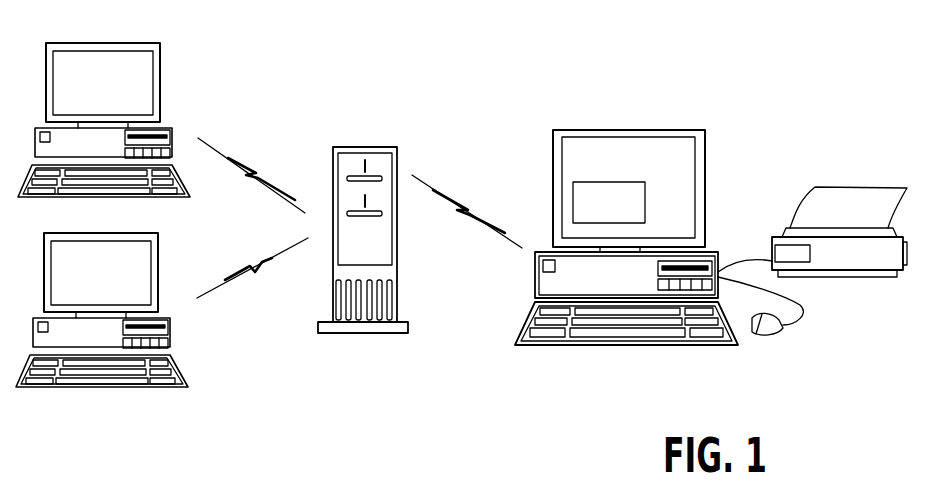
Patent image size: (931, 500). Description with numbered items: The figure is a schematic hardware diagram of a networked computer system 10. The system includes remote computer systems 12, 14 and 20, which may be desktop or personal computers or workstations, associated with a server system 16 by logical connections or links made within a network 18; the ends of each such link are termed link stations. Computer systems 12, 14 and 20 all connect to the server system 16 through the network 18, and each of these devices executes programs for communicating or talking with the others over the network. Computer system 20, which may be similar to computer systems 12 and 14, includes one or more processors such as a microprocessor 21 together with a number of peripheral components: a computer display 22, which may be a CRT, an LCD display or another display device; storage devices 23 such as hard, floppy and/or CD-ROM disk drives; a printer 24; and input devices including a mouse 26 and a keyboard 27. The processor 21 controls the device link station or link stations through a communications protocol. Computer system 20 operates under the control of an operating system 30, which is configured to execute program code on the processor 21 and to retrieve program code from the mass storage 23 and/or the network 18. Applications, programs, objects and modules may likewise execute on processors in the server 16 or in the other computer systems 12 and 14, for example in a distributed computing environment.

The networked computer system 10 is at (498, 65).
The remote computer system 12 is at (143, 43).
The remote computer system 14 is at (102, 296).
The server system 16 is at (357, 146).
The network 18 is at (230, 157).
The computer system 20 is at (643, 170).
The microprocessor 21 is at (613, 287).
The computer display 22 is at (585, 130).
The storage devices 23 is at (710, 253).
The printer 24 is at (843, 273).
The mouse 26 is at (781, 331).
The keyboard 27 is at (528, 347).
The operating system 30 is at (631, 180).